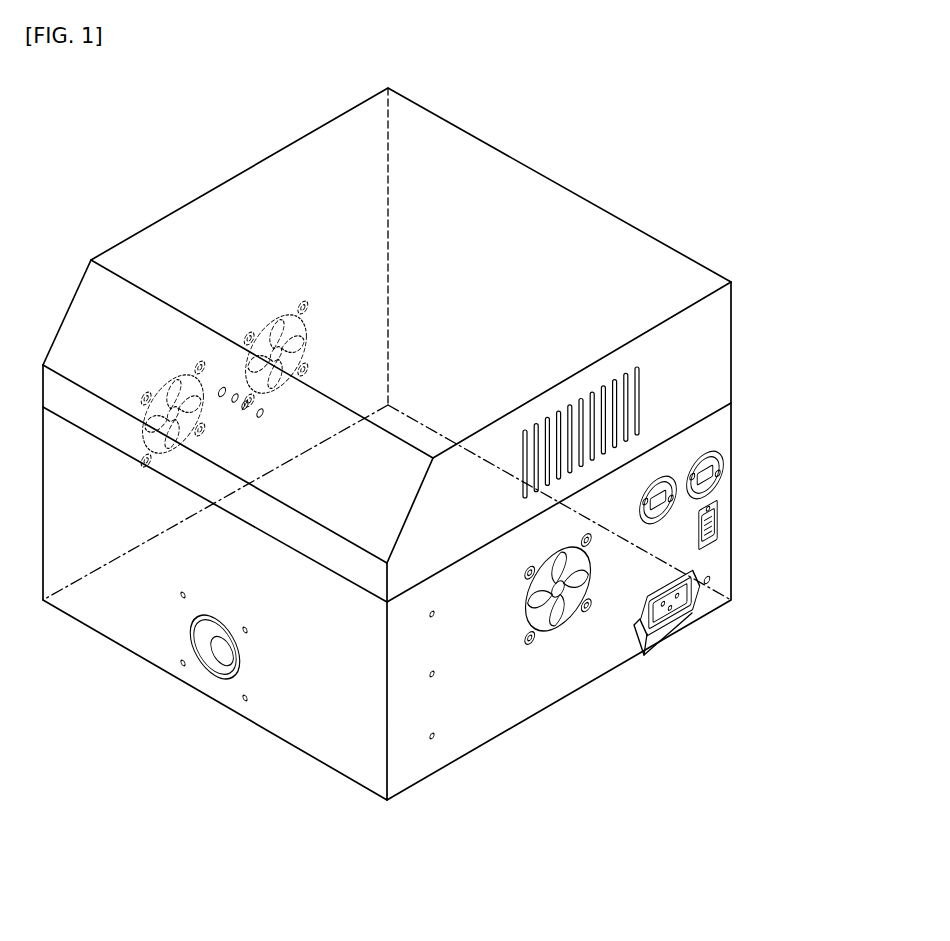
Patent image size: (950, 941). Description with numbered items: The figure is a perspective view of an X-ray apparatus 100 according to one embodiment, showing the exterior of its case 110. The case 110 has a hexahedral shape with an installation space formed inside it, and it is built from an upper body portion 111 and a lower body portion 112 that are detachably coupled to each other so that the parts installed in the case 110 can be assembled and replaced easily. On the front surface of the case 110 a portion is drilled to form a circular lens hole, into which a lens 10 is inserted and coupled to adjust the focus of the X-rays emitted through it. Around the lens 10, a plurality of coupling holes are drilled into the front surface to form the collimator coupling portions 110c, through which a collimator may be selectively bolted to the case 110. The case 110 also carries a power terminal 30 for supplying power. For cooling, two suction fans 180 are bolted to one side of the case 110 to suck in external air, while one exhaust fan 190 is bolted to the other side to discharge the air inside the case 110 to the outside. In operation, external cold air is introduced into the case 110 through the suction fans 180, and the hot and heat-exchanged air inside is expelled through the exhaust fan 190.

The X-ray apparatus 100 is at (577, 157).
The case 110 is at (812, 315).
The upper body portion 111 is at (725, 350).
The lower body portion 112 is at (725, 437).
The collimator coupling portions 110c is at (245, 702).
The lens 10 is at (202, 653).
The suction fans 180 is at (276, 330).
The exhaust fan 190 is at (558, 612).
The power terminal 30 is at (678, 615).